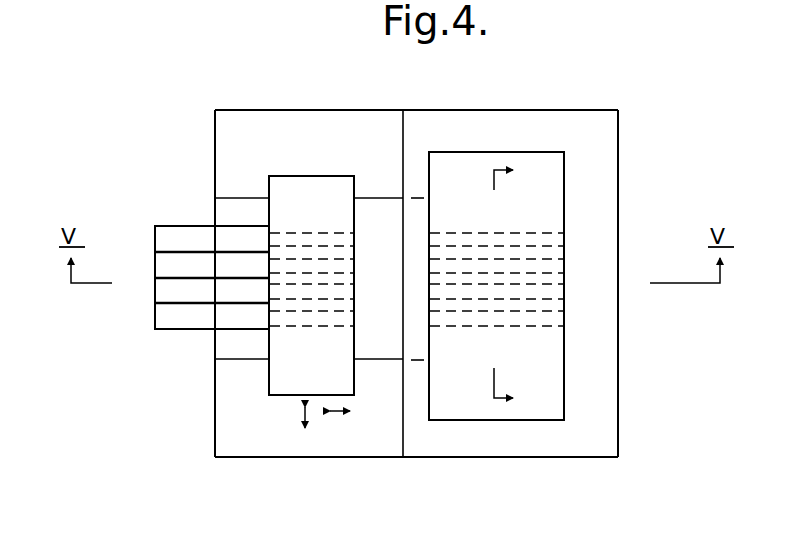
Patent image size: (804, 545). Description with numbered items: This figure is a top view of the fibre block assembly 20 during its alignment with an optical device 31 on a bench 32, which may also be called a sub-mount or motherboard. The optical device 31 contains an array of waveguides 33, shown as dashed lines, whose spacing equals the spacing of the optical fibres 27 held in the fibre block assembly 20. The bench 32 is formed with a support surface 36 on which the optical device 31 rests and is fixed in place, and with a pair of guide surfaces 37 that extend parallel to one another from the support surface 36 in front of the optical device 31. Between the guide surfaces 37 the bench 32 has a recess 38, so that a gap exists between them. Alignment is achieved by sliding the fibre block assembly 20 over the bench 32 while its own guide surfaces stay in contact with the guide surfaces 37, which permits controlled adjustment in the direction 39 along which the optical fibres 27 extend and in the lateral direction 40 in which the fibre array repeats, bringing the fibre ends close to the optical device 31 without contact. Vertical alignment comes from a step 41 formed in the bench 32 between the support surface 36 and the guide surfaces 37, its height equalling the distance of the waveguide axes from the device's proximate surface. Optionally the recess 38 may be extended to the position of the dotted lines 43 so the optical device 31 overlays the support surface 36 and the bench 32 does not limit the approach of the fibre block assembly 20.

The fibre block assembly 20 is at (278, 378).
The optical fibres 27 is at (180, 328).
The optical device 31 is at (548, 362).
The bench 32 is at (600, 400).
The waveguides 33 is at (548, 233).
The support surface 36 is at (417, 175).
The guide surfaces 37 is at (318, 124).
The recess 38 is at (374, 342).
The direction along which the optical fibres extend 39 is at (341, 429).
The lateral direction 40 is at (305, 433).
The step 41 is at (403, 135).
The dotted lines 43 is at (415, 197).